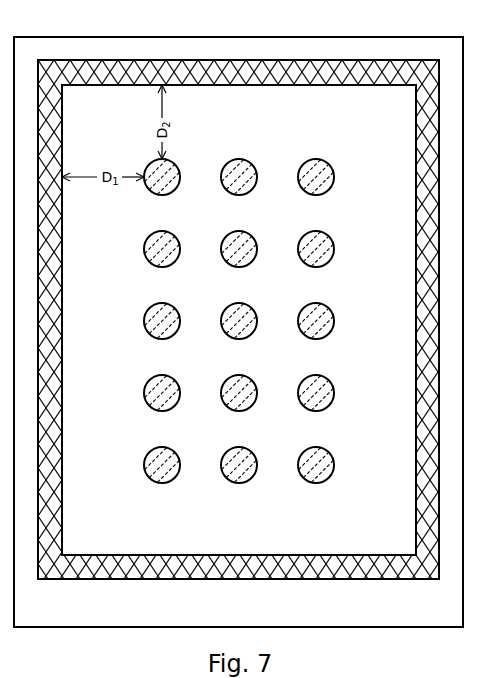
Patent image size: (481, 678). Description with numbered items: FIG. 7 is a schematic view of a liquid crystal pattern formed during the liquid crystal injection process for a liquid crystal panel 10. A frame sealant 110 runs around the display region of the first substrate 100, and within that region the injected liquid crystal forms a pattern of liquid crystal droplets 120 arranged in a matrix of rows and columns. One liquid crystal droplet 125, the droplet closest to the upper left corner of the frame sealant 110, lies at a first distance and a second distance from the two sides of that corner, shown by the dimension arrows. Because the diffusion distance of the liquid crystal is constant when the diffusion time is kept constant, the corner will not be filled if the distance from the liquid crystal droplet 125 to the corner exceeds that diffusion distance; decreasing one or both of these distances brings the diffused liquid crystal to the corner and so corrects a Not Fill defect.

The liquid crystal panel 10 is at (238, 322).
The first substrate 100 is at (238, 612).
The frame sealant 110 is at (238, 319).
The liquid crystal droplet 120 is at (271, 305).
The liquid crystal droplet 125 is at (178, 176).